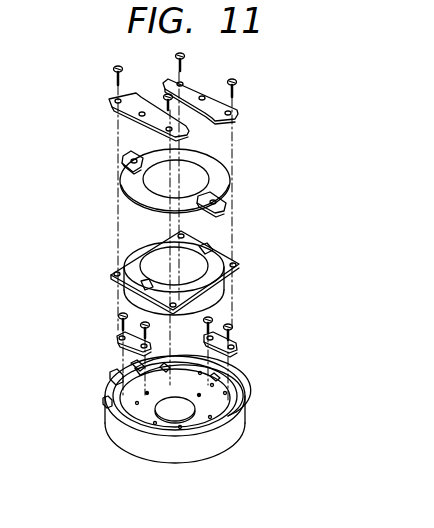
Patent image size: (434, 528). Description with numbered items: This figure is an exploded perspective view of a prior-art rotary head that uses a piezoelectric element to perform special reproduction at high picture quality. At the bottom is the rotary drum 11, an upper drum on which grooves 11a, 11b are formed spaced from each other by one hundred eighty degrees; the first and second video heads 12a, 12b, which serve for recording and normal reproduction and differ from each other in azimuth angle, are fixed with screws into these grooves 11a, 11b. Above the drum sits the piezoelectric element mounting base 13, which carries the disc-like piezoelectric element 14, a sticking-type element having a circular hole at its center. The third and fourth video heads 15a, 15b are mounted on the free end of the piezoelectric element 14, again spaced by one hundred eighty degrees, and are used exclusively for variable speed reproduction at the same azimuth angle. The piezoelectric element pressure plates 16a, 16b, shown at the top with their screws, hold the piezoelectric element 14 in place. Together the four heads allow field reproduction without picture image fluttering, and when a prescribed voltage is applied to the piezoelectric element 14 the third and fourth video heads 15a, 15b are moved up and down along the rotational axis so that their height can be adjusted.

The rotary drum 11 is at (183, 409).
The groove 11a is at (125, 367).
The groove 11b is at (238, 425).
The first video head 12a is at (120, 347).
The second video head 12b is at (234, 346).
The piezoelectric element mounting base 13 is at (240, 260).
The piezoelectric element 14 is at (220, 176).
The third video head 15a is at (121, 153).
The fourth video head 15b is at (226, 202).
The piezoelectric element pressure plate 16a is at (115, 110).
The piezoelectric element pressure plate 16b is at (237, 103).